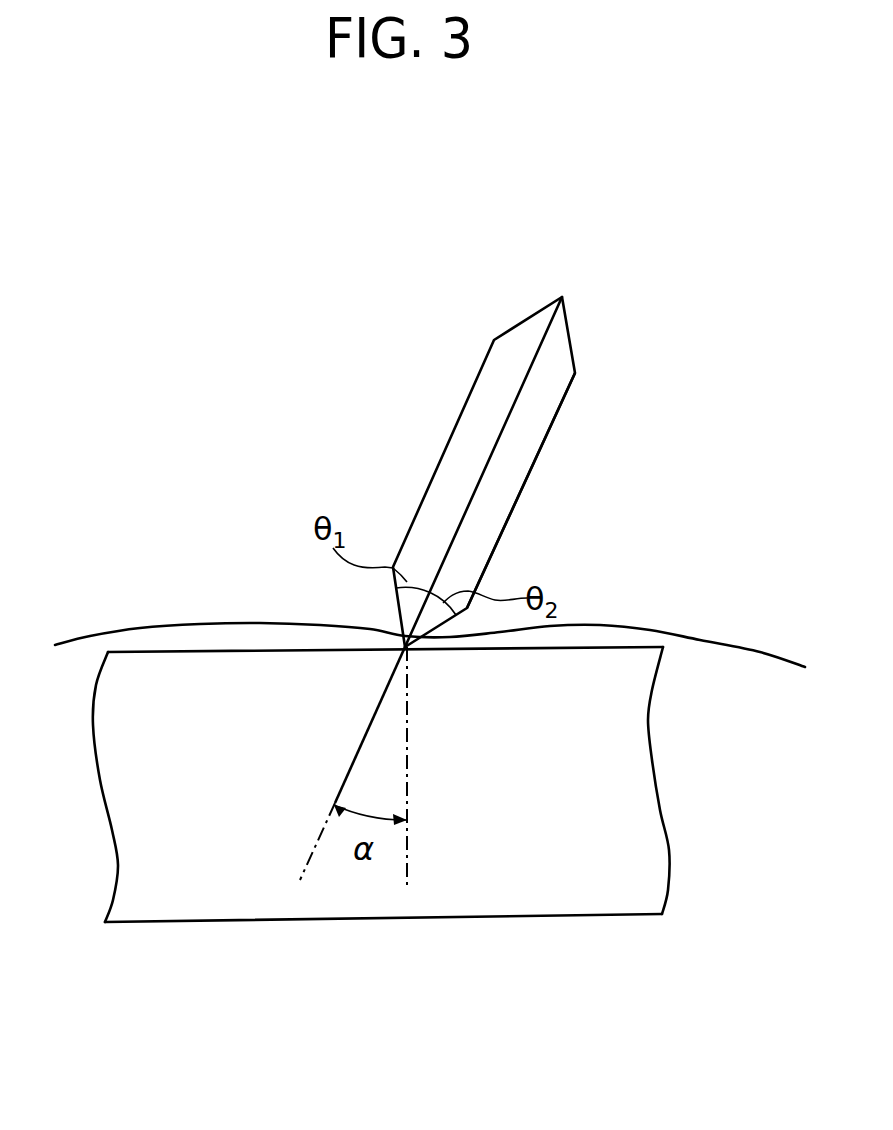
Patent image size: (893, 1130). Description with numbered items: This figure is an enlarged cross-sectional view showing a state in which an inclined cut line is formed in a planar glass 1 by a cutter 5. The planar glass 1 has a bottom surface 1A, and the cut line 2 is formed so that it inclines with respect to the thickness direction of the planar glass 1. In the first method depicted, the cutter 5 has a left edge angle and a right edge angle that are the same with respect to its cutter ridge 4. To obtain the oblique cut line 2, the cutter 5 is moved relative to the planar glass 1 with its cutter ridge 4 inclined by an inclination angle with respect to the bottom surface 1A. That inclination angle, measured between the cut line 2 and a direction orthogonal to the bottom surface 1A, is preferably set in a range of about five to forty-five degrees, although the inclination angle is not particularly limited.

The planar glass 1 is at (576, 782).
The bottom surface 1A is at (253, 648).
The cut line 2 is at (375, 717).
The cutter ridge 4 is at (502, 432).
The cutter 5 is at (520, 318).